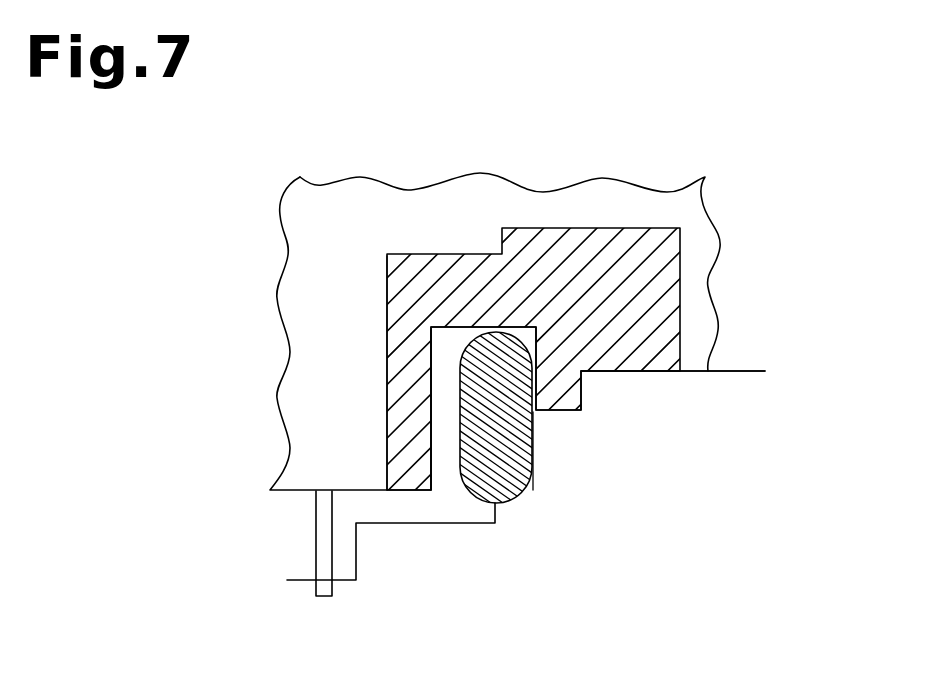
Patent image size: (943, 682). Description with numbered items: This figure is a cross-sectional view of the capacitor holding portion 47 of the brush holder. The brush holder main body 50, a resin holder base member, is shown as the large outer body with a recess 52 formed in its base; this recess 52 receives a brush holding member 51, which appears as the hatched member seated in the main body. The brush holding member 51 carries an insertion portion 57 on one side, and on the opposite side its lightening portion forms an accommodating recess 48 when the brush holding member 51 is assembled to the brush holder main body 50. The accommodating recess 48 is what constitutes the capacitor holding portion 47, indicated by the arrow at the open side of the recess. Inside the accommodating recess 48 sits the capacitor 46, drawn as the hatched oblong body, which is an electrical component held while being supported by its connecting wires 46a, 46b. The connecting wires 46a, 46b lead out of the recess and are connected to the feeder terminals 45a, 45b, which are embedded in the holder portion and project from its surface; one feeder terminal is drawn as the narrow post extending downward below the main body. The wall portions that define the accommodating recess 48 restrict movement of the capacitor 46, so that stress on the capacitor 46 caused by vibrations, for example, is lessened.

The brush holder main body 50 is at (720, 246).
The insertion portion 57 is at (440, 254).
The accommodating recess 48 is at (420, 367).
The recess 52 is at (377, 428).
The brush holding member 51 is at (640, 372).
The capacitor 46 is at (532, 453).
The capacitor holding portion 47 is at (544, 503).
The feeder terminal 45b is at (228, 543).
The feeder terminal 45a is at (316, 547).
The connecting wire 46b is at (403, 546).
The connecting wire 46a is at (451, 524).